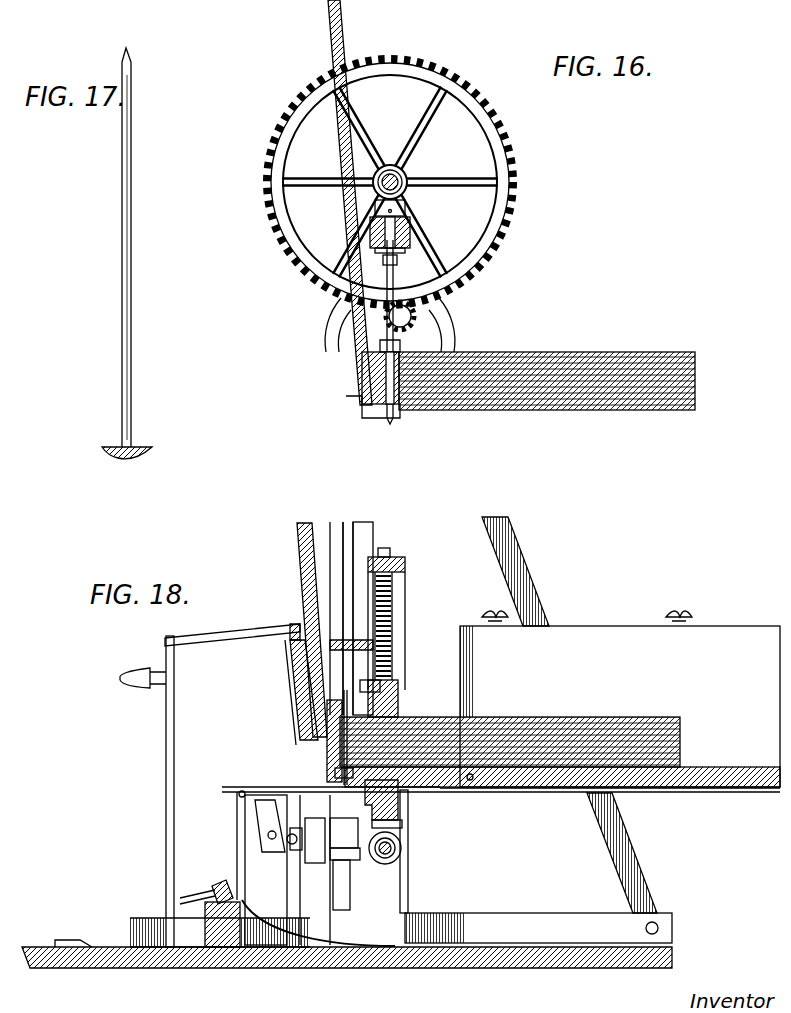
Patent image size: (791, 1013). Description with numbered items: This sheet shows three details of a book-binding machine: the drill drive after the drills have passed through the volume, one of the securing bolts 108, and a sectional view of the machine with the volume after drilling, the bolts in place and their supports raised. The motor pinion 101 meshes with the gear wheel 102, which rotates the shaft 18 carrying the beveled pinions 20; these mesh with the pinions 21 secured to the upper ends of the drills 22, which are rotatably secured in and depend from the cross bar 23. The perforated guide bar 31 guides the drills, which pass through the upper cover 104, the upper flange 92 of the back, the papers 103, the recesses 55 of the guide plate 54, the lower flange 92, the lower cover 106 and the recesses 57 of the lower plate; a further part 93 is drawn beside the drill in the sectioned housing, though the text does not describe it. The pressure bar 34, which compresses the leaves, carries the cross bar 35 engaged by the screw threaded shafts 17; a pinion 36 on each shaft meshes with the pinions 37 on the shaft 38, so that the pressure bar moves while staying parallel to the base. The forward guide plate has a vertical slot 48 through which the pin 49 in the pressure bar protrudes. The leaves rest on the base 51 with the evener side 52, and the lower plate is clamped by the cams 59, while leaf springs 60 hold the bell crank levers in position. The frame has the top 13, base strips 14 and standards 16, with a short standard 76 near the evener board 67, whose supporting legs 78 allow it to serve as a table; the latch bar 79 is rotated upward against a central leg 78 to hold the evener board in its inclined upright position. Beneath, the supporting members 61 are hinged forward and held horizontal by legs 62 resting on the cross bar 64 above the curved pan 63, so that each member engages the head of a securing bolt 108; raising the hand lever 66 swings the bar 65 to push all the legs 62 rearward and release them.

In FIG. 18, the top 13 is at (672, 955).
In FIG. 18, the base strips 14 is at (72, 940).
In FIG. 18, the standards 16 is at (356, 524).
In FIG. 18, the screw threaded shafts 17 is at (394, 600).
In FIG. 16, the shaft 18 is at (405, 176).
In FIG. 16, the beveled pinions 20 is at (376, 155).
In FIG. 16, the pinions 21 is at (375, 206).
In FIG. 16, the drills 22 is at (362, 392).
In FIG. 18, the drills 22 is at (340, 550).
In FIG. 16, the cross bar 23 is at (410, 230).
In FIG. 16, the guide bar 31 is at (345, 338).
In FIG. 18, the pressure bar 34 is at (393, 702).
In FIG. 18, the cross bar 35 is at (404, 565).
In FIG. 18, the pinion 36 is at (398, 830).
In FIG. 18, the pinions 37 is at (402, 848).
In FIG. 18, the shaft 38 is at (400, 856).
In FIG. 18, the vertical slot 48 is at (390, 655).
In FIG. 18, the pin 49 is at (384, 683).
In FIG. 18, the base 51 is at (733, 767).
In FIG. 18, the evener side 52 is at (620, 715).
In FIG. 18, the guide plate 54 is at (480, 793).
In FIG. 18, the recesses 55 is at (335, 772).
In FIG. 18, the recesses 57 is at (298, 786).
In FIG. 18, the cams 59 is at (303, 836).
In FIG. 18, the leaf springs 60 is at (350, 886).
In FIG. 18, the supporting members 61 is at (226, 784).
In FIG. 18, the legs 62 is at (236, 831).
In FIG. 18, the curved pan 63 is at (302, 947).
In FIG. 18, the cross bar 64 is at (225, 947).
In FIG. 18, the bar 65 is at (214, 884).
In FIG. 18, the hand lever 66 is at (192, 896).
In FIG. 18, the evener board 67 is at (290, 665).
In FIG. 18, the short standard 76 is at (266, 870).
In FIG. 18, the supporting legs 78 is at (248, 637).
In FIG. 18, the latch bar 79 is at (166, 742).
In FIG. 16, the flange 92 is at (402, 379).
In FIG. 18, the flange 92 is at (360, 725).
In FIG. 16, the needle holder 93 is at (365, 375).
In FIG. 18, the needle holder 93 is at (327, 712).
In FIG. 16, the pinion 101 is at (424, 318).
In FIG. 16, the gear wheel 102 is at (518, 172).
In FIG. 16, the papers 103 is at (540, 412).
In FIG. 18, the papers 103 is at (555, 720).
In FIG. 16, the upper cover 104 is at (338, 20).
In FIG. 18, the upper cover 104 is at (308, 523).
In FIG. 16, the lower cover 106 is at (331, 92).
In FIG. 18, the lower cover 106 is at (330, 535).
In FIG. 16, the securing bolts 108 is at (390, 332).
In FIG. 17, the securing bolts 108 is at (131, 287).
In FIG. 18, the securing bolts 108 is at (343, 732).